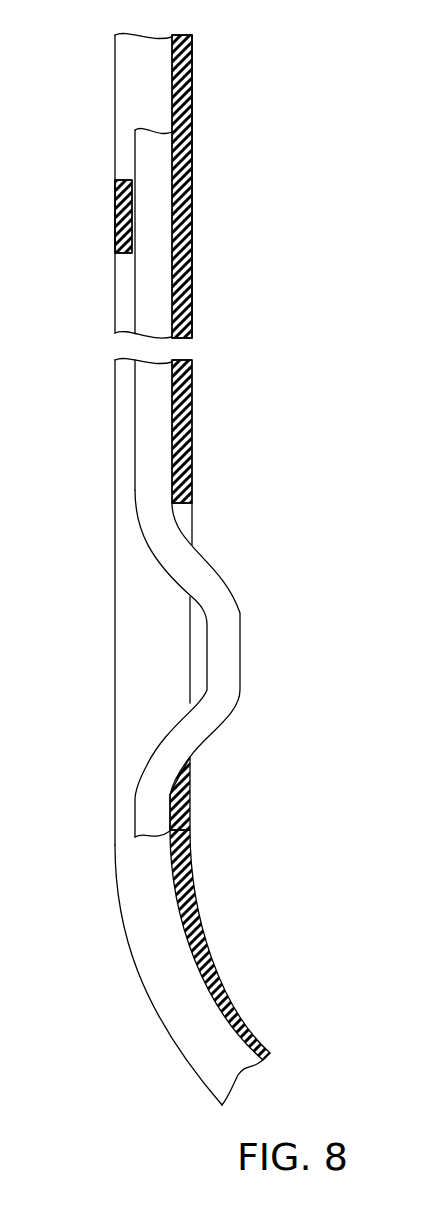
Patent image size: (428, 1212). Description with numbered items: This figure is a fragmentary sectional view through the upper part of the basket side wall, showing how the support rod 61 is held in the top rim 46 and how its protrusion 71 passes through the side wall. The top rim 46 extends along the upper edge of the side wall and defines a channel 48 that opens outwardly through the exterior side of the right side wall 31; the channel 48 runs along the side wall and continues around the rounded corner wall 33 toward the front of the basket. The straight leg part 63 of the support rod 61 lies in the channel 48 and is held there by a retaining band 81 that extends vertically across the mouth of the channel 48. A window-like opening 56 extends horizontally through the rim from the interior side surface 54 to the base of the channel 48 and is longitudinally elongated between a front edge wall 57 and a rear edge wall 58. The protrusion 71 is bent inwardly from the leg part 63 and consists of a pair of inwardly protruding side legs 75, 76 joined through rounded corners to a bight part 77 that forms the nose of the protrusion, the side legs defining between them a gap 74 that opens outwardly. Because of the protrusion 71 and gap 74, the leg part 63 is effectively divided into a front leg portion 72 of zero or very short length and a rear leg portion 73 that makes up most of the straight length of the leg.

The channel 48 is at (131, 95).
The top rim 46 is at (186, 100).
The rear leg portion 73 is at (148, 157).
The retaining band 81 is at (121, 204).
The right straight leg part 63 is at (150, 297).
The right side wall 31 is at (193, 193).
The interior side surface 54 is at (190, 430).
The rear edge wall 58 is at (188, 512).
The support rod 61 is at (135, 447).
The gap 74 is at (160, 568).
The window-like opening 56 is at (183, 632).
The inwardly protruding side leg 76 is at (193, 568).
The protrusion 71 is at (242, 613).
The bight part 77 is at (223, 663).
The inwardly protruding side leg 75 is at (193, 731).
The front edge wall 57 is at (190, 768).
The front leg portion 72 is at (153, 795).
The corner wall 33 is at (223, 957).